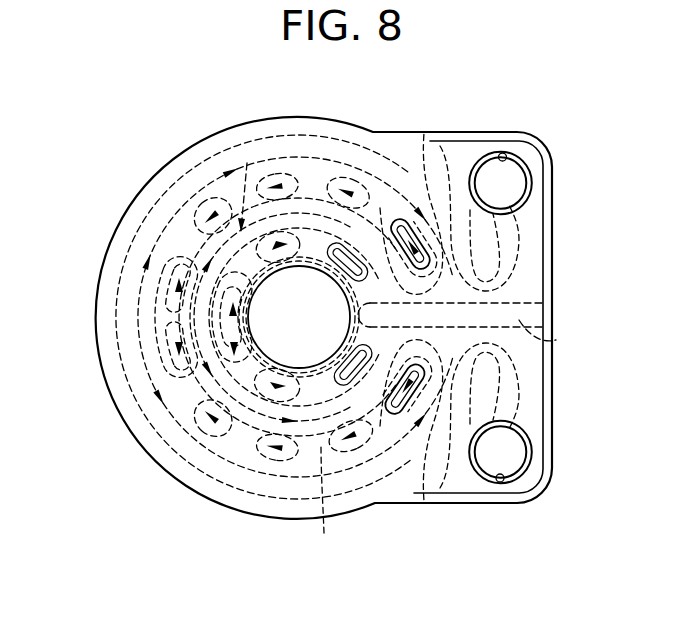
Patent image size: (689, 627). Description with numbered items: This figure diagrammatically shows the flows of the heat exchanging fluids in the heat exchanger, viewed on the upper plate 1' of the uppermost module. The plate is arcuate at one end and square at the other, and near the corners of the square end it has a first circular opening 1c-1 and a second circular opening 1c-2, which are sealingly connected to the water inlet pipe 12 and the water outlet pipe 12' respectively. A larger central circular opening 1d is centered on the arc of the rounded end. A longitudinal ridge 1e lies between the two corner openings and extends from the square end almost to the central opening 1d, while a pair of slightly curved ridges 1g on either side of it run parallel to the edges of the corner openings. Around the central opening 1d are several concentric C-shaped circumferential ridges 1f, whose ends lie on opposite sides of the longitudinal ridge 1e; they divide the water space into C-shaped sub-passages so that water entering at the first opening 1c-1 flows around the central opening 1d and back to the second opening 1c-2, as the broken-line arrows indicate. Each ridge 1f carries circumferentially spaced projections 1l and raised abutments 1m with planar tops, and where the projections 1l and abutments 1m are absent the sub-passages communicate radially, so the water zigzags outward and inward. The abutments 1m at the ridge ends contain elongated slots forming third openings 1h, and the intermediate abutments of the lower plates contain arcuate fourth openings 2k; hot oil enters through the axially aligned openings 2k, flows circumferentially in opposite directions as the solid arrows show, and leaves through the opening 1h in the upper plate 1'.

The upper plate of the uppermost module 1' is at (324, 284).
The first circular opening 1c-1 is at (503, 153).
The second circular opening 1c-2 is at (500, 482).
The central circular opening 1d is at (250, 316).
The longitudinal ridge 1e is at (549, 330).
The C-shaped circumferential ridge 1f is at (322, 504).
The laterally elongated curved ridge 1g is at (424, 133).
The third opening 1h is at (401, 222).
The projection 1l is at (206, 211).
The abutment 1m is at (346, 176).
The fourth opening 2k is at (164, 318).
The water inlet pipe 12 is at (537, 183).
The water outlet pipe 12' is at (540, 452).